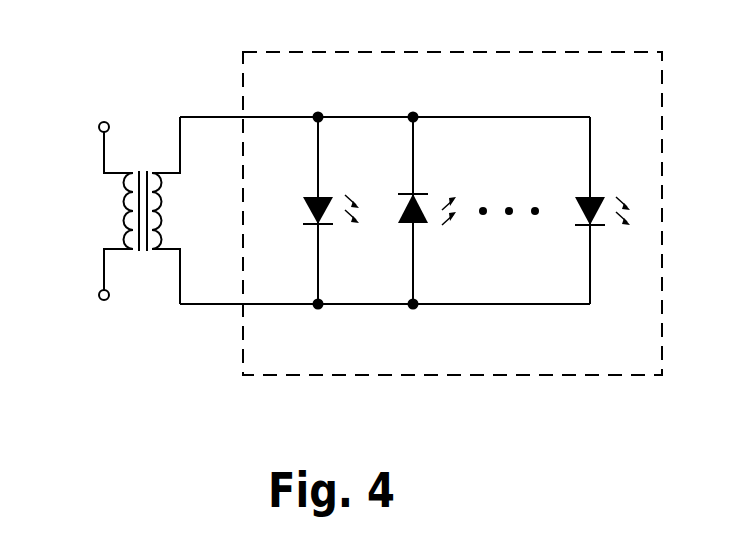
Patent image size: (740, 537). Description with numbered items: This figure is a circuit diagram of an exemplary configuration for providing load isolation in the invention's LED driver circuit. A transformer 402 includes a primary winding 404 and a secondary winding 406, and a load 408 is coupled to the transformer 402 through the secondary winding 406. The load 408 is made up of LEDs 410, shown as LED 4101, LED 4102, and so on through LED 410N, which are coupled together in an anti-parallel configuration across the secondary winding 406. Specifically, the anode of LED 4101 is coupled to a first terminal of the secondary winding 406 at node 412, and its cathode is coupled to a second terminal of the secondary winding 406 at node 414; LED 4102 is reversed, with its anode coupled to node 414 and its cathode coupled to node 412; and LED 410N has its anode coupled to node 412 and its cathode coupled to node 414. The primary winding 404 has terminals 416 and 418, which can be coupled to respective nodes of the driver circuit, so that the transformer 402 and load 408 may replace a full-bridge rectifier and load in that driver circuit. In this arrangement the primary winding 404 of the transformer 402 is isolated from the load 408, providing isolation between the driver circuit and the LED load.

The transformer 402 is at (142, 95).
The primary winding 404 is at (128, 228).
The secondary winding 406 is at (157, 228).
The load 408 is at (450, 52).
The LEDs 410 is at (440, 210).
The LED 4101 is at (304, 213).
The LED 4102 is at (398, 215).
The LED 410N is at (576, 212).
The node 412 is at (318, 112).
The node 414 is at (318, 309).
The terminal 416 is at (99, 124).
The terminal 418 is at (99, 292).